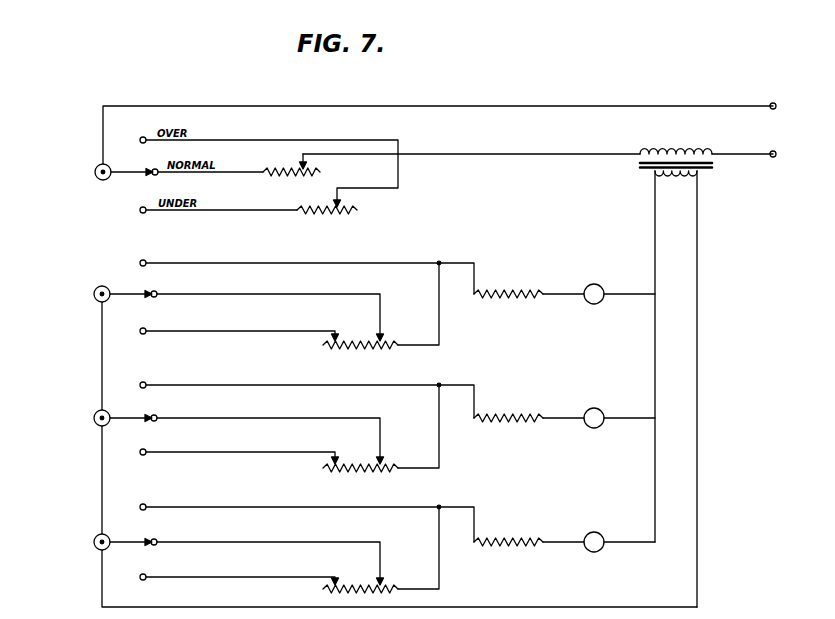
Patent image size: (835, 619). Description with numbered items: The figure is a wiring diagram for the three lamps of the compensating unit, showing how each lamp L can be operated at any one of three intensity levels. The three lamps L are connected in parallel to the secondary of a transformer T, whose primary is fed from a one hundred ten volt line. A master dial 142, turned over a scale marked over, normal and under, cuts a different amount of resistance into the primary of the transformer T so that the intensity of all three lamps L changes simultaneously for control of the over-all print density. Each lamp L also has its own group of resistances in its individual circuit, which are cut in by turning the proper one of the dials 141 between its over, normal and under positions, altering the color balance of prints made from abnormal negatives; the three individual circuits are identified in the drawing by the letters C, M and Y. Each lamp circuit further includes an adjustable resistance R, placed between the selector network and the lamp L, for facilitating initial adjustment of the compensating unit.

The dial 141 is at (123, 298).
The dial 142 is at (125, 176).
The transformer T is at (675, 150).
The adjustable resistance R is at (526, 288).
The lamp L is at (598, 289).
The cyan channel C is at (263, 300).
The magenta channel M is at (262, 422).
The yellow channel Y is at (262, 544).